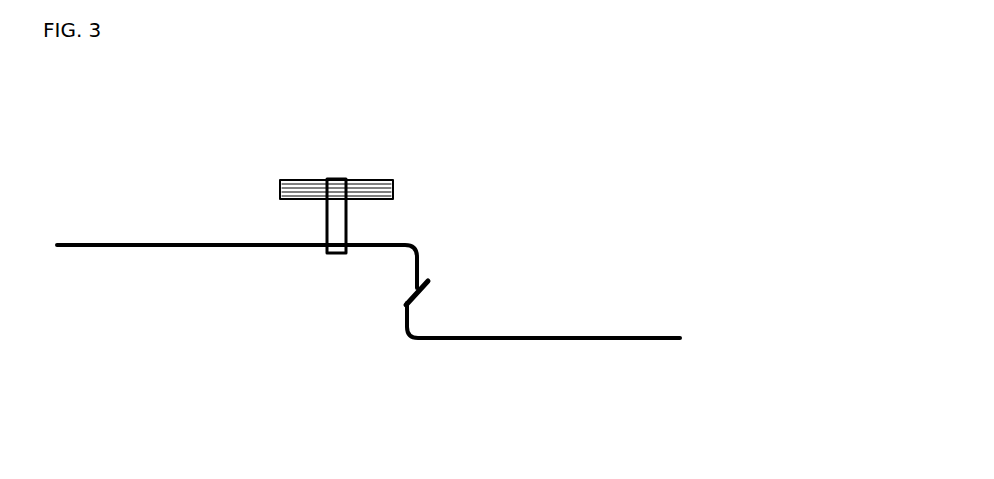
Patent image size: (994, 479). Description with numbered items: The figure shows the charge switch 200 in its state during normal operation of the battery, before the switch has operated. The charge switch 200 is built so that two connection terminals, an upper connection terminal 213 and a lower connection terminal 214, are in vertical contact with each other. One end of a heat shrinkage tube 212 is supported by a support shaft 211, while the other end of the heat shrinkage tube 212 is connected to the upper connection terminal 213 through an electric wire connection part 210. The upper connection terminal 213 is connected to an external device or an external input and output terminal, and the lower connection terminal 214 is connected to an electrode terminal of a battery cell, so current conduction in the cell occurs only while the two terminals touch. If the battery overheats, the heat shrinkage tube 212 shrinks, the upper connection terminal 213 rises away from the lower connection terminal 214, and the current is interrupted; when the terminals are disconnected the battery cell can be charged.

The charge switch 200 is at (77, 105).
The electric wire connection part 210 is at (325, 251).
The support shaft 211 is at (362, 178).
The heat shrinkage tube 212 is at (318, 217).
The upper connection terminal 213 is at (422, 257).
The lower connection terminal 214 is at (595, 340).